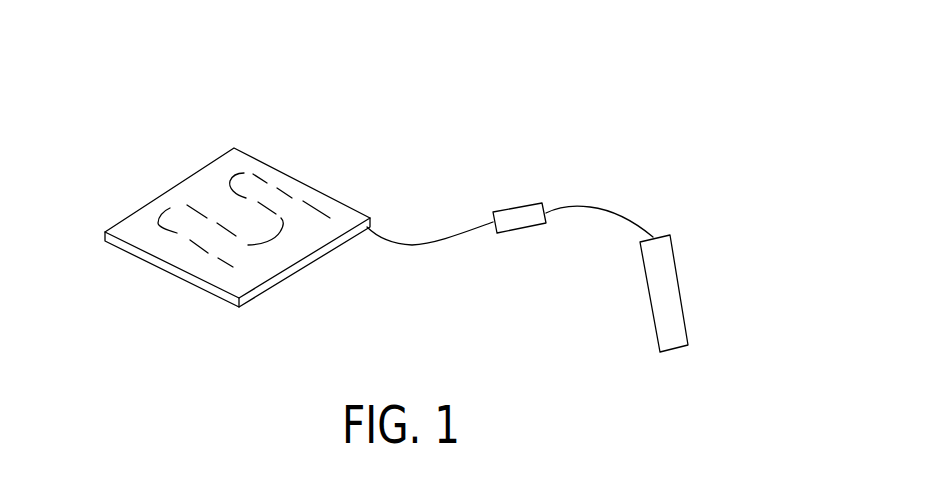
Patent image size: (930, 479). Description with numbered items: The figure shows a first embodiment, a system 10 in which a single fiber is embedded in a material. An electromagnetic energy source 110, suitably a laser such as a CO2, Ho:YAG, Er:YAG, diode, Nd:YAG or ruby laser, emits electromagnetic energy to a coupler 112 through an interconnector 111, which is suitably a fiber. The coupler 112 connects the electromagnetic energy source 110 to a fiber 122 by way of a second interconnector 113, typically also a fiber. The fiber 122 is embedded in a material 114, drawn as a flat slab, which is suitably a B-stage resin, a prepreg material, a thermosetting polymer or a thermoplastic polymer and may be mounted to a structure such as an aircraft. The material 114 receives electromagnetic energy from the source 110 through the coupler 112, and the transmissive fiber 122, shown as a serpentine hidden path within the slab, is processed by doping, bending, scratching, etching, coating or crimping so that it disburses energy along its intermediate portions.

The first embodiment 10 is at (667, 67).
The electromagnetic energy source 110 is at (700, 295).
The interconnector 111 is at (590, 207).
The coupler 112 is at (523, 205).
The interconnector 113 is at (428, 243).
The material 114 is at (312, 165).
The fiber 122 is at (199, 192).